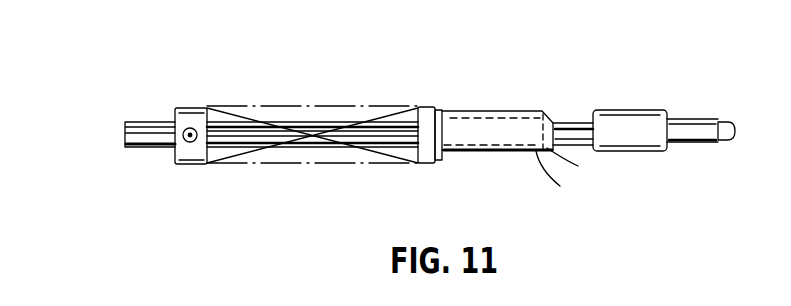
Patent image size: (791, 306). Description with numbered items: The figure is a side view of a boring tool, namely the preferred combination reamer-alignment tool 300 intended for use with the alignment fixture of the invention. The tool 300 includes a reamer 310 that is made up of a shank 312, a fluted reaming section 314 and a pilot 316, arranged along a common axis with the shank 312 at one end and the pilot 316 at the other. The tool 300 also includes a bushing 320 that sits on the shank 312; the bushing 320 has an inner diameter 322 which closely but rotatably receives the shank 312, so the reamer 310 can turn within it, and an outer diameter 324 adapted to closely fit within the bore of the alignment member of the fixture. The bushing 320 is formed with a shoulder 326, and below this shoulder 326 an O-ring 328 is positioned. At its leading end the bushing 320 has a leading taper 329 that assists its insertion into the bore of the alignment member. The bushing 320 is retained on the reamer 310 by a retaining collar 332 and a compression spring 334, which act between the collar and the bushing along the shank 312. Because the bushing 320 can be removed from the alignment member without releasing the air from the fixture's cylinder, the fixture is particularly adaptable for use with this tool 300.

The combination reamer-alignment tool 300 is at (379, 58).
The reamer 310 is at (660, 105).
The shank 312 is at (575, 123).
The fluted reaming section 314 is at (625, 116).
The pilot 316 is at (706, 131).
The bushing 320 is at (456, 108).
The inner diameter 322 is at (518, 153).
The outer diameter 324 is at (574, 183).
The shoulder 326 is at (425, 165).
The O-ring 328 is at (439, 165).
The leading taper 329 is at (586, 166).
The retaining collar 332 is at (192, 164).
The compression spring 334 is at (293, 164).